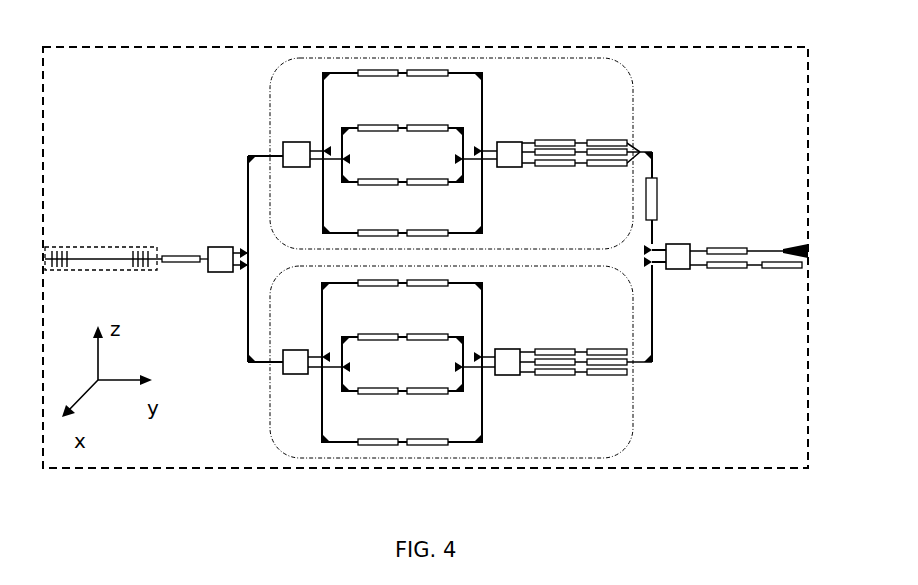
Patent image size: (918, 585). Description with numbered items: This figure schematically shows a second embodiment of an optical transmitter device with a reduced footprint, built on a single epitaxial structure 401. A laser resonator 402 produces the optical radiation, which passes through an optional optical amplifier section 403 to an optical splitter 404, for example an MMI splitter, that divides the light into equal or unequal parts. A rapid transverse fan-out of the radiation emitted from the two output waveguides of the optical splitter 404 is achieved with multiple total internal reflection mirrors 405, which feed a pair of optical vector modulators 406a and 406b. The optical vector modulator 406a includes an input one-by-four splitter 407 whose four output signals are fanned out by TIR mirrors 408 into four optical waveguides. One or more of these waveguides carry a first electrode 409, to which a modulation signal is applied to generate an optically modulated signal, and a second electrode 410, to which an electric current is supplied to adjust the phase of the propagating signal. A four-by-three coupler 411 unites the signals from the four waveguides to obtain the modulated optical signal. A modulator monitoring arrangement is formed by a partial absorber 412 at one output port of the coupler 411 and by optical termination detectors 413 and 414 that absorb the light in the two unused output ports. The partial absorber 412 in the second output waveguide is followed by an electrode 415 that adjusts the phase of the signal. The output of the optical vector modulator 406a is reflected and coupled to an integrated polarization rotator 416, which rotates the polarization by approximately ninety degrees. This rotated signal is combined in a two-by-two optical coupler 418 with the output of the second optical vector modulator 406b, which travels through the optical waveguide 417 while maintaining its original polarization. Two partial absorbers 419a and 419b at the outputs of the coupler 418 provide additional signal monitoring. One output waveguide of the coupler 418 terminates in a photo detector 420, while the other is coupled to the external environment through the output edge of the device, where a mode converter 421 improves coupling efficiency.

The single epitaxial structure 401 is at (85, 47).
The laser resonator 402 is at (80, 247).
The optical amplifier section 403 is at (176, 256).
The optical splitter 404 is at (218, 247).
The total internal reflection mirrors 405 is at (246, 155).
The optical vector modulator 406a is at (270, 86).
The second optical vector modulator 406b is at (270, 432).
The input 1×4 splitter 407 is at (292, 150).
The TIR mirrors 408 is at (323, 70).
The first electrode 409 is at (377, 178).
The second electrode 410 is at (422, 178).
The 4×3 coupler 411 is at (508, 142).
The partial absorber 412 is at (570, 149).
The optical termination detector 413 is at (620, 167).
The optical termination detector 414 is at (630, 142).
The electrode 415 is at (630, 152).
The integrated polarization rotator 416 is at (657, 195).
The optical waveguide 417 is at (652, 322).
The optical coupler 418 is at (680, 243).
The partial absorber 419a is at (725, 247).
The partial absorber 419b is at (723, 269).
The photo detector 420 is at (768, 269).
The mode converter 421 is at (797, 248).